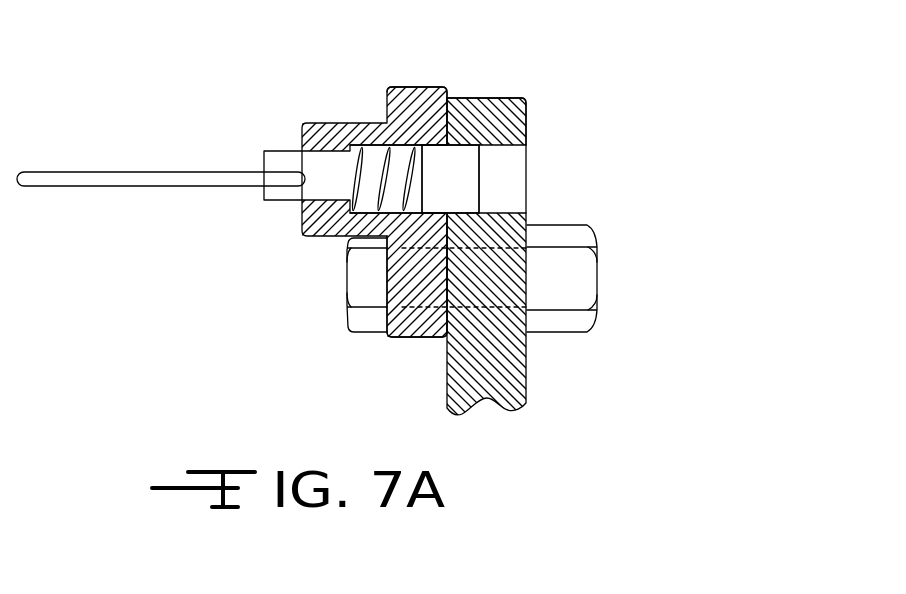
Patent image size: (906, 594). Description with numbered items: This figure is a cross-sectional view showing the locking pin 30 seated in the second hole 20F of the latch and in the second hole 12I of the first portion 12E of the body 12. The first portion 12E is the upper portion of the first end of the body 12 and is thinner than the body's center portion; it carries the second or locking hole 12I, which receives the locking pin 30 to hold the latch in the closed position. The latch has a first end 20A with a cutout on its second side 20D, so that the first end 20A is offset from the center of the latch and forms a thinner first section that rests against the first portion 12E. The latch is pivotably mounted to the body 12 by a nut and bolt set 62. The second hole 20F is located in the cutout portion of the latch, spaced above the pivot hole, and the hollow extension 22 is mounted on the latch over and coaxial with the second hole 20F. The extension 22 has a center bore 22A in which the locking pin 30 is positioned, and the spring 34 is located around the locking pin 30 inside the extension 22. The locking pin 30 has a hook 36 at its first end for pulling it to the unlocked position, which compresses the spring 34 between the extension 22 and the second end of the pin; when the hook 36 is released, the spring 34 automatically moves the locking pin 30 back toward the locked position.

The body 12 is at (447, 308).
The first portion 12E is at (510, 115).
The second hole 12I is at (525, 200).
The first end 20A is at (415, 97).
The second side 20D is at (452, 236).
The second hole 20F is at (410, 146).
The hollow extension 22 is at (315, 233).
The center bore 22A is at (374, 150).
The locking pin 30 is at (466, 178).
The spring 34 is at (362, 145).
The hook 36 is at (117, 179).
The nut and bolt set 62 is at (586, 322).